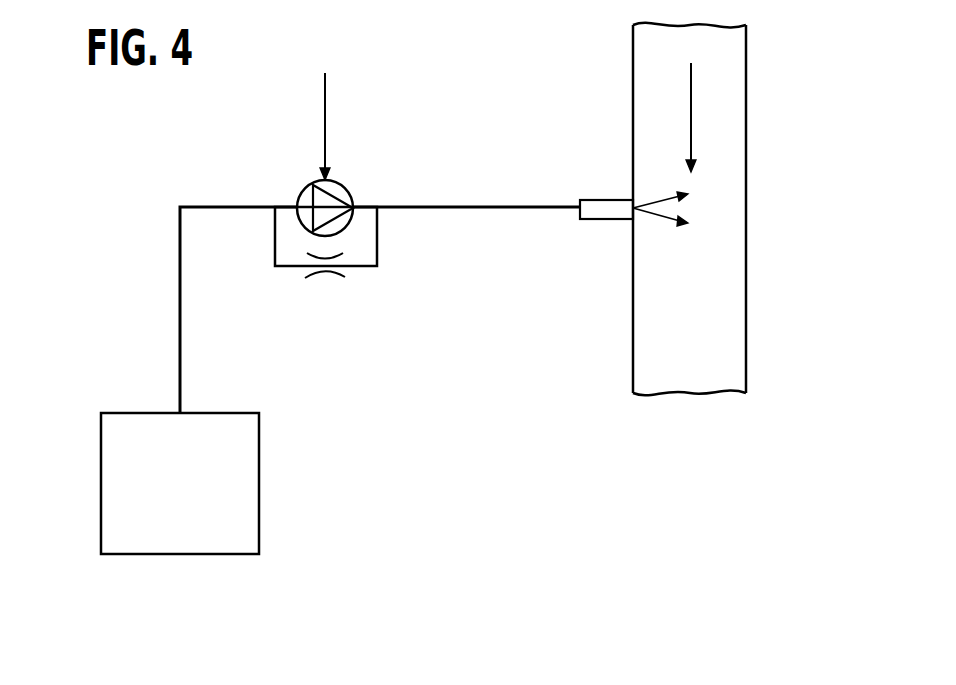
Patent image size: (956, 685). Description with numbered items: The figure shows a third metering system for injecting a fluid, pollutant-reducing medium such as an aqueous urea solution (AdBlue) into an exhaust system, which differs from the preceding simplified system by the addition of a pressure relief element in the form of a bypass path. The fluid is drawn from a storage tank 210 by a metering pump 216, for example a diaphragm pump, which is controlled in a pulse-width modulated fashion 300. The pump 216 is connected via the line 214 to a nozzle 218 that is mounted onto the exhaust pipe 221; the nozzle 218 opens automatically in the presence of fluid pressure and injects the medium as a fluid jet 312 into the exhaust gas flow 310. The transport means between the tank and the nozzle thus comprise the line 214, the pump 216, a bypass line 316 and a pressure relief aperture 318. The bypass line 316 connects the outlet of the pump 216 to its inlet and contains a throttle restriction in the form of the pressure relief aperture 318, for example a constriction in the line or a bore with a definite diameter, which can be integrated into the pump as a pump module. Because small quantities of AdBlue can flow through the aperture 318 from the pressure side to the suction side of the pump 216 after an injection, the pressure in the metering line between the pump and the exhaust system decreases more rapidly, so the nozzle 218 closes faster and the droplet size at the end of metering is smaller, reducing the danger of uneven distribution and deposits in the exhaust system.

The storage tank 210 is at (250, 484).
The line 214 is at (178, 300).
The metering pump 216 is at (300, 197).
The nozzle 218 is at (603, 205).
The exhaust pipe 221 is at (747, 276).
The pulse-width modulated control 300 is at (327, 107).
The exhaust gas flow 310 is at (693, 80).
The fluid jet 312 is at (660, 217).
The bypass line 316 is at (377, 237).
The pressure relief aperture 318 is at (325, 276).